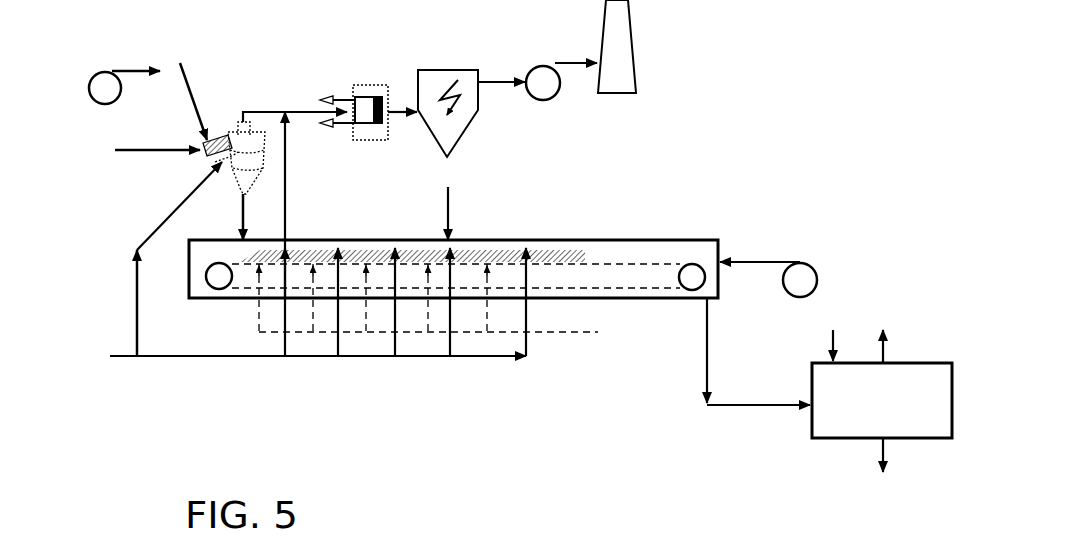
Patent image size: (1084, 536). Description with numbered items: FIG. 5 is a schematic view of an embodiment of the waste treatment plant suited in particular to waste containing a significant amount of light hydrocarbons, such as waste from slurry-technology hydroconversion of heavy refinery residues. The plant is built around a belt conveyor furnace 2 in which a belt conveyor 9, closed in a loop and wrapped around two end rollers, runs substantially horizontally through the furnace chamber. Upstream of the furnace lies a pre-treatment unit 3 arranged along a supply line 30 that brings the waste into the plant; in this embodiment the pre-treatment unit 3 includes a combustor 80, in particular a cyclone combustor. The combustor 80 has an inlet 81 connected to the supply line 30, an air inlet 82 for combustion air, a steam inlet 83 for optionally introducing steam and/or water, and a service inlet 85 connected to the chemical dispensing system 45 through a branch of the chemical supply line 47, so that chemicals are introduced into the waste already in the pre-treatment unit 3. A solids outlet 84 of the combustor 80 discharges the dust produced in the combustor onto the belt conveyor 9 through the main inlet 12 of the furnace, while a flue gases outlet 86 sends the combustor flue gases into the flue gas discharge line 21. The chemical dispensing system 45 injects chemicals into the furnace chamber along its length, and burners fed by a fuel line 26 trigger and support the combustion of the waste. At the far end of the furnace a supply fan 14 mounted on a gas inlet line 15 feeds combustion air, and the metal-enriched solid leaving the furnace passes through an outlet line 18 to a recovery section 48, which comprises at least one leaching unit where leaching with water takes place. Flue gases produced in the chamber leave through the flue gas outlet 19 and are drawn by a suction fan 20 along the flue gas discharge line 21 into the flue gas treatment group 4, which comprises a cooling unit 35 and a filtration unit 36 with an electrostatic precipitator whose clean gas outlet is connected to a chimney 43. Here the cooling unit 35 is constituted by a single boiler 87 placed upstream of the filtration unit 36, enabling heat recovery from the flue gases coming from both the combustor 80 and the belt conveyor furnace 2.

The belt conveyor furnace 2 is at (630, 257).
The pre-treatment unit 3 is at (67, 228).
The flue gas treatment group 4 is at (366, 99).
The belt conveyor 9 is at (585, 257).
The main inlet 12 is at (245, 244).
The supply fan 14 is at (802, 278).
The gas inlet line 15 is at (768, 262).
The outlet line 18 is at (702, 347).
The flue gas outlet 19 is at (288, 240).
The suction fan 20 is at (540, 72).
The flue gas discharge line 21 is at (310, 100).
The fuel line 26 is at (573, 337).
The supply line 30 is at (125, 152).
The cooling unit 35 is at (390, 132).
The filtration unit 36 is at (468, 75).
The chimney 43 is at (623, 22).
The chemical dispensing system 45 is at (462, 360).
The chemical supply line 47 is at (202, 360).
The recovery section 48 is at (832, 425).
The combustor 80 is at (243, 120).
The inlet 81 is at (205, 158).
The air inlet 82 is at (200, 145).
The steam inlet 83 is at (208, 130).
The solids outlet 84 is at (233, 197).
The service inlet 85 is at (225, 165).
The flue gases outlet 86 is at (243, 112).
The single boiler 87 is at (366, 130).